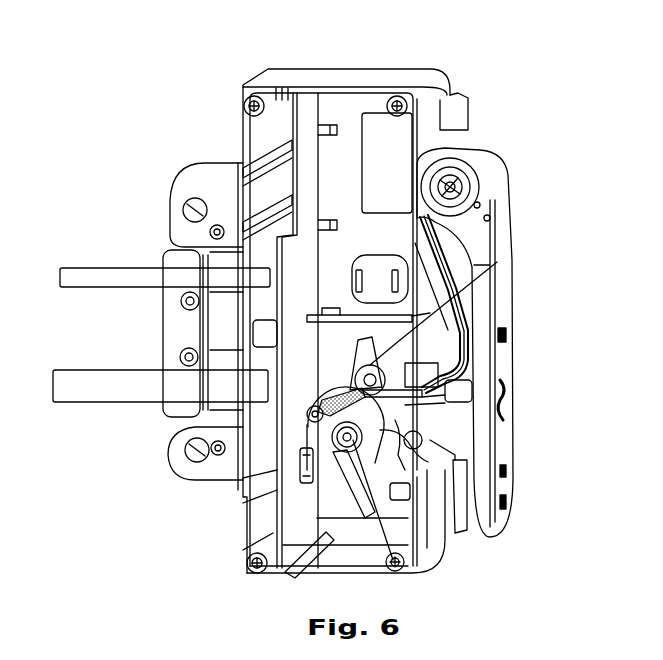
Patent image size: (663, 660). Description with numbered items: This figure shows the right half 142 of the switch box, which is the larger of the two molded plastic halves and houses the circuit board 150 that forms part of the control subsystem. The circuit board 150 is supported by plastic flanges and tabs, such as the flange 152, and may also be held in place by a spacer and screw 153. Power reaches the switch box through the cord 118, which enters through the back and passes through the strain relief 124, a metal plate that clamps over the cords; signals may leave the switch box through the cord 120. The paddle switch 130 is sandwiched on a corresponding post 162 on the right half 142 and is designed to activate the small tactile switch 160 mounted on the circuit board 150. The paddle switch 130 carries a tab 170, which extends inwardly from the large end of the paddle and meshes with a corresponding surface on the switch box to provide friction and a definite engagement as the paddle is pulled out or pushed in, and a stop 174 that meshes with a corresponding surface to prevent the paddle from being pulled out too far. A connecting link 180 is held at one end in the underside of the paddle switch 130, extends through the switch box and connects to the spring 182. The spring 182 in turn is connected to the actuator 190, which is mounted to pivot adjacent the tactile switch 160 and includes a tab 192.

The right half 142 is at (389, 77).
The flange 152 is at (263, 162).
The spacer and screw 153 is at (259, 325).
The circuit board 150 is at (300, 521).
The cord 120 is at (85, 282).
The cord 118 is at (88, 387).
The strain relief 124 is at (188, 332).
The post 162 is at (463, 182).
The paddle switch 130 is at (499, 448).
The spring 182 is at (470, 268).
The connecting link 180 is at (399, 381).
The stop 174 is at (457, 395).
The actuator 190 is at (447, 470).
The tab 170 is at (447, 485).
The tab 192 is at (400, 568).
The tactile switch 160 is at (299, 474).